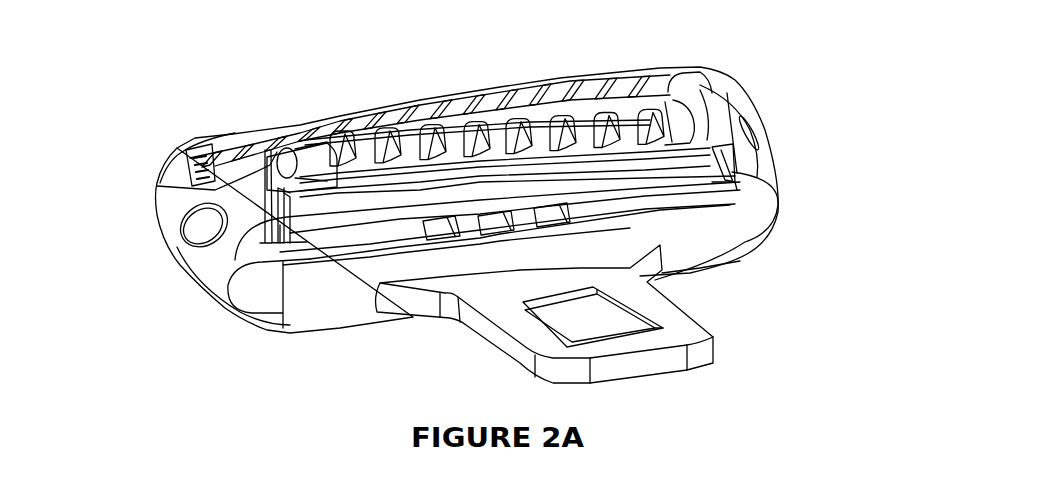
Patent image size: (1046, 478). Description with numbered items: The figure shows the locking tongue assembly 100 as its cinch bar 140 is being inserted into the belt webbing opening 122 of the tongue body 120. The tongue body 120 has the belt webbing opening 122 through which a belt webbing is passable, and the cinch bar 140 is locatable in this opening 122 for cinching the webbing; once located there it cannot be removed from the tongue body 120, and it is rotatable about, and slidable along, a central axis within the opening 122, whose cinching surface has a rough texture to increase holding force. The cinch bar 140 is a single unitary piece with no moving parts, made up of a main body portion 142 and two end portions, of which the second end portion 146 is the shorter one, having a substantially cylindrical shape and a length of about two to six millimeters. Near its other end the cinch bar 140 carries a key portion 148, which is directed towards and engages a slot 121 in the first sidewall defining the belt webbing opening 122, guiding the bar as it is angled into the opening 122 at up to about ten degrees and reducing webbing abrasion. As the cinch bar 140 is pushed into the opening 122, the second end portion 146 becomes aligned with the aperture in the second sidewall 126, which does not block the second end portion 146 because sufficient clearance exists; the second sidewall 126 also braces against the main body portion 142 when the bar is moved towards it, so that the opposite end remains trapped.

The tongue assembly 100 is at (140, 90).
The tongue body 120 is at (760, 138).
The slot 121 is at (733, 178).
The belt webbing opening 122 is at (343, 200).
The second sidewall 126 is at (280, 200).
The cinch bar 140 is at (470, 140).
The main body portion 142 is at (545, 140).
The second end portion 146 is at (312, 160).
The key portion 148 is at (712, 160).